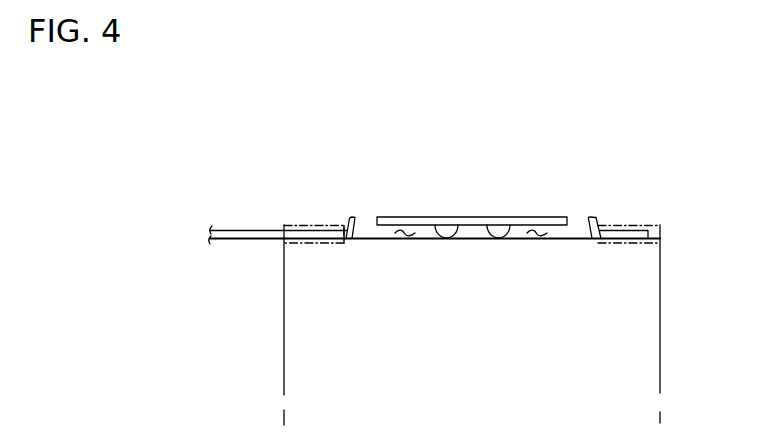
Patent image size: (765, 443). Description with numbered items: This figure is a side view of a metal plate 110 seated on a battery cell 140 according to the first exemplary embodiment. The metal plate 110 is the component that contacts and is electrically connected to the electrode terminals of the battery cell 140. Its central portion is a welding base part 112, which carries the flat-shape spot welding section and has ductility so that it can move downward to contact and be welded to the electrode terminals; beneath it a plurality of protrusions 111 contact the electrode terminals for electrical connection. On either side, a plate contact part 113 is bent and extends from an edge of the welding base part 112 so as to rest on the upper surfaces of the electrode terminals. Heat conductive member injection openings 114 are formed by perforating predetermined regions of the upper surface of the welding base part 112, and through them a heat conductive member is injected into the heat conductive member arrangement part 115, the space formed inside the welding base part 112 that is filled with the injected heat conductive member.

The metal plate 110 is at (256, 194).
The protrusions 111 is at (494, 228).
The welding base part 112 is at (508, 217).
The plate contact part 113 is at (300, 223).
The heat conductive member injection openings 114 is at (370, 222).
The heat conductive member arrangement part 115 is at (408, 229).
The battery cell 140 is at (643, 335).